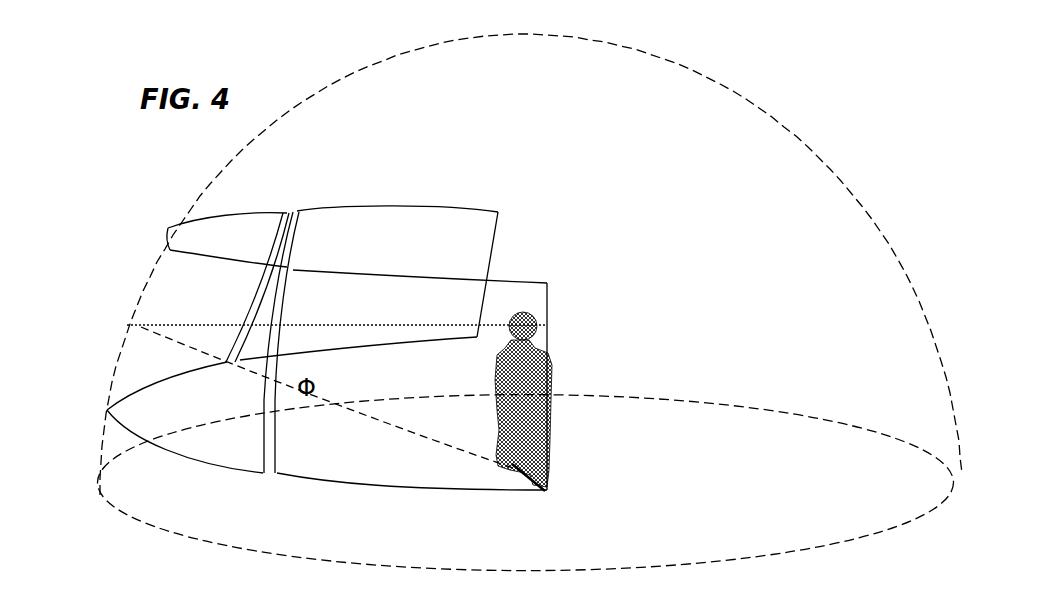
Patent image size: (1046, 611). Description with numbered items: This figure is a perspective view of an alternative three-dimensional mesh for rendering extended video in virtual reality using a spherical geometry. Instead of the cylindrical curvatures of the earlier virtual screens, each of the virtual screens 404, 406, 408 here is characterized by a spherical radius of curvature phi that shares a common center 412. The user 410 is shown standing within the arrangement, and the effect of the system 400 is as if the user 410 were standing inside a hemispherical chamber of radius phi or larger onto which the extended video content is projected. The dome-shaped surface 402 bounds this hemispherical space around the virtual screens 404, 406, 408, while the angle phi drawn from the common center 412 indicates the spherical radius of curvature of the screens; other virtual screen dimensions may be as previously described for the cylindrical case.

The system 400 is at (530, 285).
The dome 402 is at (850, 192).
The virtual screen 404 is at (202, 221).
The virtual screen 406 is at (330, 205).
The virtual screen 408 is at (450, 493).
The user 410 is at (523, 312).
The common center 412 is at (529, 490).